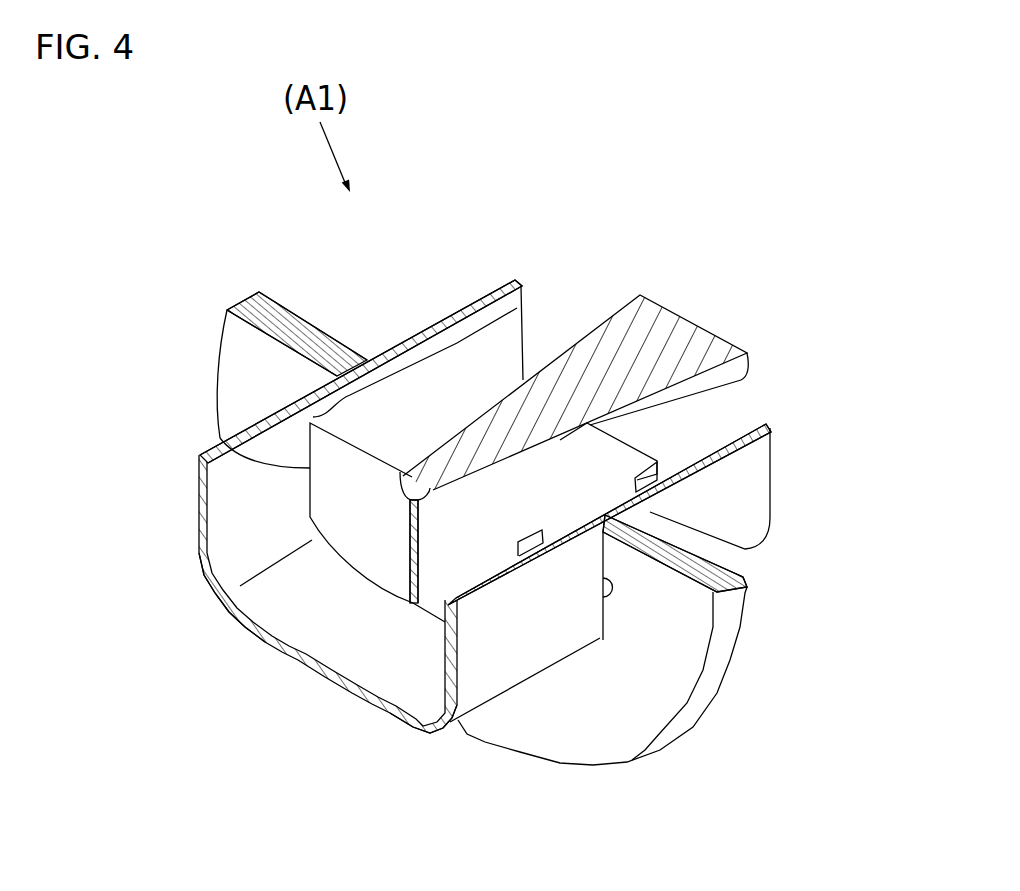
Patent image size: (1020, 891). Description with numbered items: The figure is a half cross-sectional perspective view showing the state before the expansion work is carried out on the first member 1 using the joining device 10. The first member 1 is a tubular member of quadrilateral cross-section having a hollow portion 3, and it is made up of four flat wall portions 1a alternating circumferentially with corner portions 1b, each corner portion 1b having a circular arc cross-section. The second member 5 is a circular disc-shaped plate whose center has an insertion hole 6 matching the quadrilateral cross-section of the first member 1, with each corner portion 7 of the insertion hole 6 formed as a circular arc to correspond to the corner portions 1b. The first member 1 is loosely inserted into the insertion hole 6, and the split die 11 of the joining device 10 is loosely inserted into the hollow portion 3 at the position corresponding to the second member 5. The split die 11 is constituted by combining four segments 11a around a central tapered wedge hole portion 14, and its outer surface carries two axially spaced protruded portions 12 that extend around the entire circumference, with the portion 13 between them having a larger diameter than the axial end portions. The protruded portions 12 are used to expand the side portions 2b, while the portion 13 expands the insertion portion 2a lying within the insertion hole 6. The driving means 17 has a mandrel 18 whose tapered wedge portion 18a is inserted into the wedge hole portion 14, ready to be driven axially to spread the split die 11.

The first member 1 is at (503, 283).
The flat wall portion 1a is at (197, 479).
The corner portion 1b is at (212, 595).
The insertion portion 2a is at (746, 550).
The side portion 2b is at (686, 515).
The hollow portion 3 is at (283, 593).
The second member 5 is at (286, 317).
The insertion hole 6 is at (604, 605).
The corner portion of the insertion hole 7 is at (590, 655).
The joining device 10 is at (745, 406).
The split die 11 is at (293, 467).
The segment 11a is at (340, 497).
The protruded portion 12 is at (623, 490).
The portion between protruded portions 13 is at (595, 504).
The wedge hole portion 14 is at (487, 417).
The driving means 17 is at (641, 292).
The mandrel 18 is at (622, 340).
The wedge portion 18a is at (483, 443).